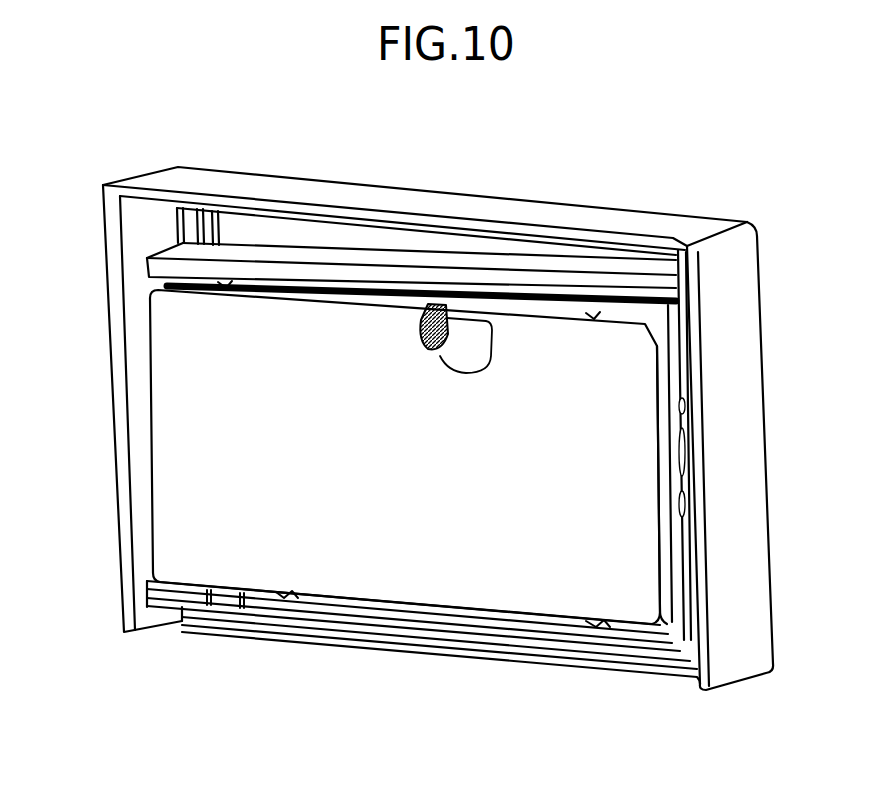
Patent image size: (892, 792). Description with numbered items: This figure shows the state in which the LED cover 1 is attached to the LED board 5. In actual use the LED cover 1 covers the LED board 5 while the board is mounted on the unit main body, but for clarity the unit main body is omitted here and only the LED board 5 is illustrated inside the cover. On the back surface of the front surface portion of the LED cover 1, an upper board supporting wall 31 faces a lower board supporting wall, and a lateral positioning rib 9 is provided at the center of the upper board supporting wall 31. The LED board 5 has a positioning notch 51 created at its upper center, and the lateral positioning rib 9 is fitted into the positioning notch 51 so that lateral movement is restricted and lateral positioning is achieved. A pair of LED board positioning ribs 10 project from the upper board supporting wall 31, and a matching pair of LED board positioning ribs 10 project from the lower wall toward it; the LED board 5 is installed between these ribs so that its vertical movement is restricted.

The LED cover 1 is at (730, 344).
The LED board 5 is at (202, 435).
The lateral positioning rib 9 is at (433, 304).
The LED board positioning rib 10 is at (223, 283).
The upper board supporting wall 31 is at (302, 258).
The positioning notch 51 is at (483, 304).